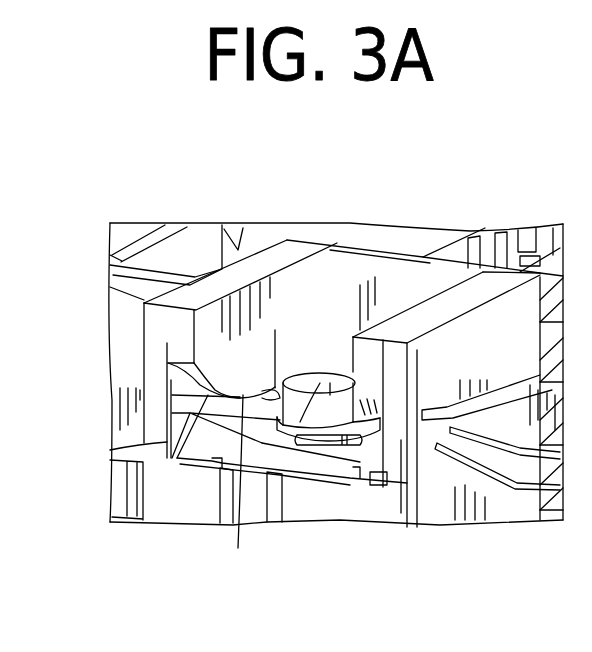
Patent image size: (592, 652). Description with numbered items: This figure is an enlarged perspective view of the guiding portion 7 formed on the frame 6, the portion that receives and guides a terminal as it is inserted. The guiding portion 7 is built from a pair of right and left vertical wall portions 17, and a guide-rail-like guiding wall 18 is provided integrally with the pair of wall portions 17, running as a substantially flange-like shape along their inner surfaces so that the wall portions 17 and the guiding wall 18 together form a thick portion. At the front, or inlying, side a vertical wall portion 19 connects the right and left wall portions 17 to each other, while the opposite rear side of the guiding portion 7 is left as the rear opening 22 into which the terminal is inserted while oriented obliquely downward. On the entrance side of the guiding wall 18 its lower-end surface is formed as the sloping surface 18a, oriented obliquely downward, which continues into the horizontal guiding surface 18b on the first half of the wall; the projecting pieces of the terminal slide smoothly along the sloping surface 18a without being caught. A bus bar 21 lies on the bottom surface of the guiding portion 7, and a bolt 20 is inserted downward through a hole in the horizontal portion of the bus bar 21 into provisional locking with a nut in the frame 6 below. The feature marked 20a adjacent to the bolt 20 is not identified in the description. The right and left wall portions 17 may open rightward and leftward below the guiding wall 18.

The frame 6 is at (155, 518).
The guiding portion 7 is at (233, 228).
The vertical wall portions 17 is at (150, 353).
The guiding wall 18 is at (234, 489).
The sloping surface 18a is at (177, 458).
The horizontal guiding surface 18b is at (292, 242).
The front-side vertical wall portion 19 is at (377, 280).
The bolt 20 is at (340, 434).
The top face of boss 20a is at (303, 436).
The bus bar 21 is at (353, 440).
The rear opening 22 is at (170, 438).